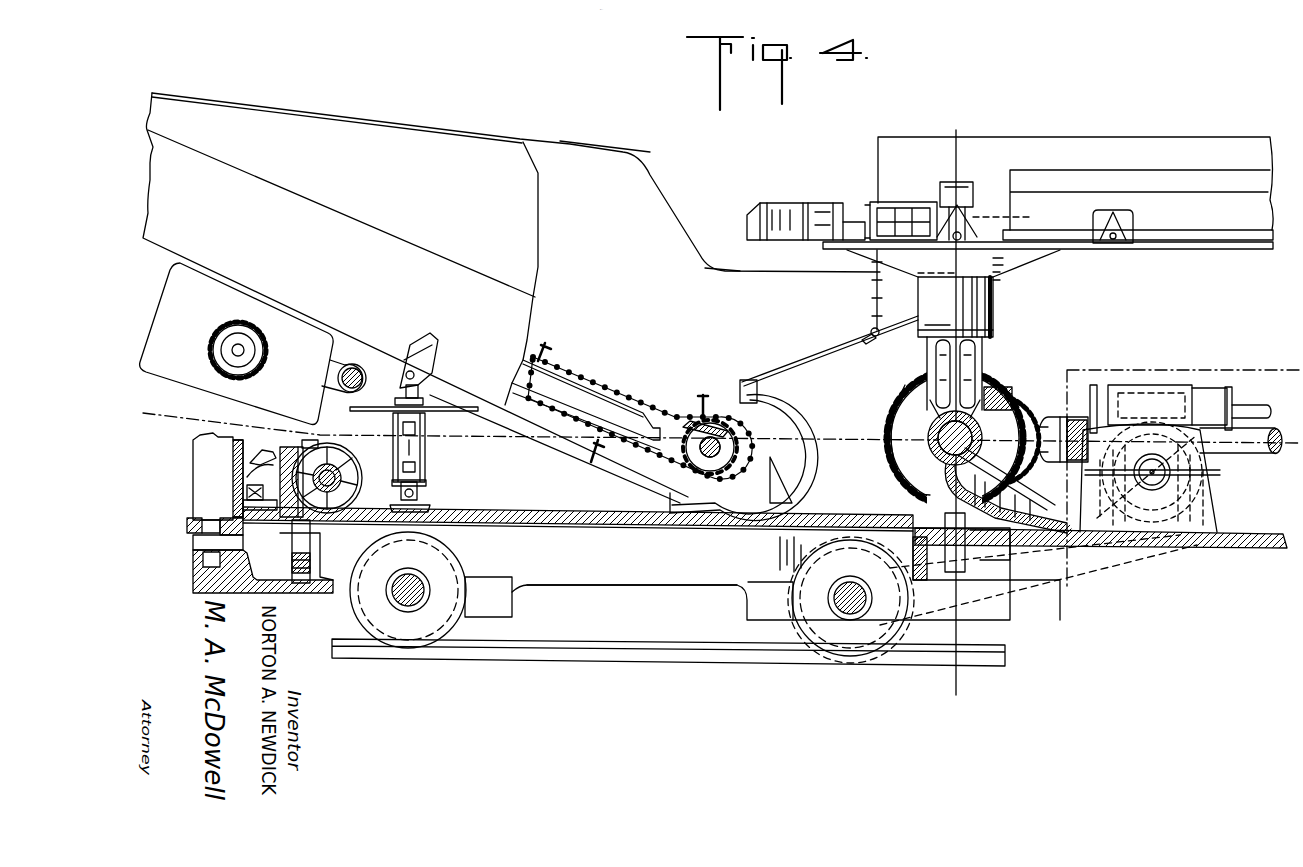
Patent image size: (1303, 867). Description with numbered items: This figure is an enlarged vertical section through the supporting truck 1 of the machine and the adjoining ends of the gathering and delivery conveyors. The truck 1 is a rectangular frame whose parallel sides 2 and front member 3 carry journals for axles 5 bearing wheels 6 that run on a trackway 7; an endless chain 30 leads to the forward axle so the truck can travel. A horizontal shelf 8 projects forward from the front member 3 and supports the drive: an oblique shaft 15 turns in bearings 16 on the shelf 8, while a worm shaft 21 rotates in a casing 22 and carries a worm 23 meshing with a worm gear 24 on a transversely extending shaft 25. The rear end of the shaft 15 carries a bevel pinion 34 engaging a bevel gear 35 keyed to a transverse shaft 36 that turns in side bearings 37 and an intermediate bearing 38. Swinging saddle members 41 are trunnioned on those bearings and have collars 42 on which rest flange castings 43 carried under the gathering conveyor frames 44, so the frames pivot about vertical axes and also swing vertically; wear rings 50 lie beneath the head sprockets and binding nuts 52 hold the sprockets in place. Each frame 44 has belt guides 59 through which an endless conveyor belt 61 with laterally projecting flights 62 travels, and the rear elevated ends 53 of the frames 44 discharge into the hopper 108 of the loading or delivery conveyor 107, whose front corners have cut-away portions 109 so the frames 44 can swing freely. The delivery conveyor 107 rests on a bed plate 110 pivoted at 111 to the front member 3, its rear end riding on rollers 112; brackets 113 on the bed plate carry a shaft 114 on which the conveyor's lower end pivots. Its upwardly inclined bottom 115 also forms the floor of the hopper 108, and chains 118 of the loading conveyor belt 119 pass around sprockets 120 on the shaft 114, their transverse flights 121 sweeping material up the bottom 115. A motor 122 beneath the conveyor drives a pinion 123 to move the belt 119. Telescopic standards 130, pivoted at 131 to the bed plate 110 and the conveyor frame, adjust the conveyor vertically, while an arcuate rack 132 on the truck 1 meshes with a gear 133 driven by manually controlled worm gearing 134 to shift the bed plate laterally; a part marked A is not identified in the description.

The truck 1 is at (640, 580).
The sides 2 is at (567, 577).
The front member 3 is at (993, 573).
The axles 5 is at (840, 597).
The wheels 6 is at (450, 640).
The trackway 7 is at (640, 653).
The shelf 8 is at (1212, 547).
The shaft 15 is at (1230, 458).
The bearings 16 is at (1075, 425).
The worm shaft 21 is at (1237, 412).
The casing 22 is at (1188, 392).
The worm 23 is at (1142, 402).
The worm gear 24 is at (1220, 510).
The transversely extending shaft 25 is at (1152, 489).
The endless chain 30 is at (905, 653).
The bevel pinion 34 is at (1033, 405).
The bevel gear 35 is at (992, 383).
The shaft 36 is at (917, 430).
The bearings 37 is at (928, 493).
The intermediate bearing 38 is at (1040, 543).
The saddle members 41 is at (977, 345).
The collars 42 is at (913, 337).
The flange castings 43 is at (993, 293).
The gathering conveyor frames 44 is at (1227, 250).
The wear rings 50 is at (963, 328).
The binding nuts 52 is at (970, 182).
The rear elevated ends 53 is at (1130, 247).
The belt guides 59 is at (1173, 185).
The endless conveyor belt 61 is at (888, 202).
The flights 62 is at (788, 210).
The delivery conveyor 107 is at (511, 298).
The hopper 108 is at (637, 203).
The cut-away portions 109 is at (720, 228).
The bed plate 110 is at (533, 510).
The pivot 111 is at (977, 570).
The rollers 112 is at (310, 583).
The brackets 113 is at (765, 493).
The shaft 114 is at (742, 427).
The bottom 115 is at (592, 383).
The chains 118 is at (623, 402).
The loading conveyor belt 119 is at (555, 358).
The sprockets 120 is at (705, 400).
The flights 121 is at (548, 342).
The motor 122 is at (253, 344).
The pinion 123 is at (265, 337).
The telescopic standards 130 is at (420, 445).
The pivots 131 is at (432, 357).
The arcuate rack 132 is at (273, 490).
The gear 133 is at (247, 528).
The worm gearing 134 is at (322, 445).
The bracket A is at (200, 578).